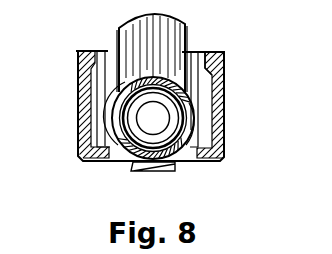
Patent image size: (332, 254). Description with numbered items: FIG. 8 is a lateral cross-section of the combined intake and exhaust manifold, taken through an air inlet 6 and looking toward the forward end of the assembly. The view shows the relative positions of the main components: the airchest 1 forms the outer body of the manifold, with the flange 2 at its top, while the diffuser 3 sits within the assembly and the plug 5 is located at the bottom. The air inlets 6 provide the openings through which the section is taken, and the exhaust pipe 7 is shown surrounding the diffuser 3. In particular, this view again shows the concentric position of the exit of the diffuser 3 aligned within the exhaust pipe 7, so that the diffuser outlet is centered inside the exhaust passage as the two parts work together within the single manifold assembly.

The airchest 1 is at (225, 102).
The flange 2 is at (225, 60).
The diffuser 3 is at (185, 35).
The plug 5 is at (172, 163).
The air inlet 6 is at (137, 170).
The exhaust pipe 7 is at (115, 48).